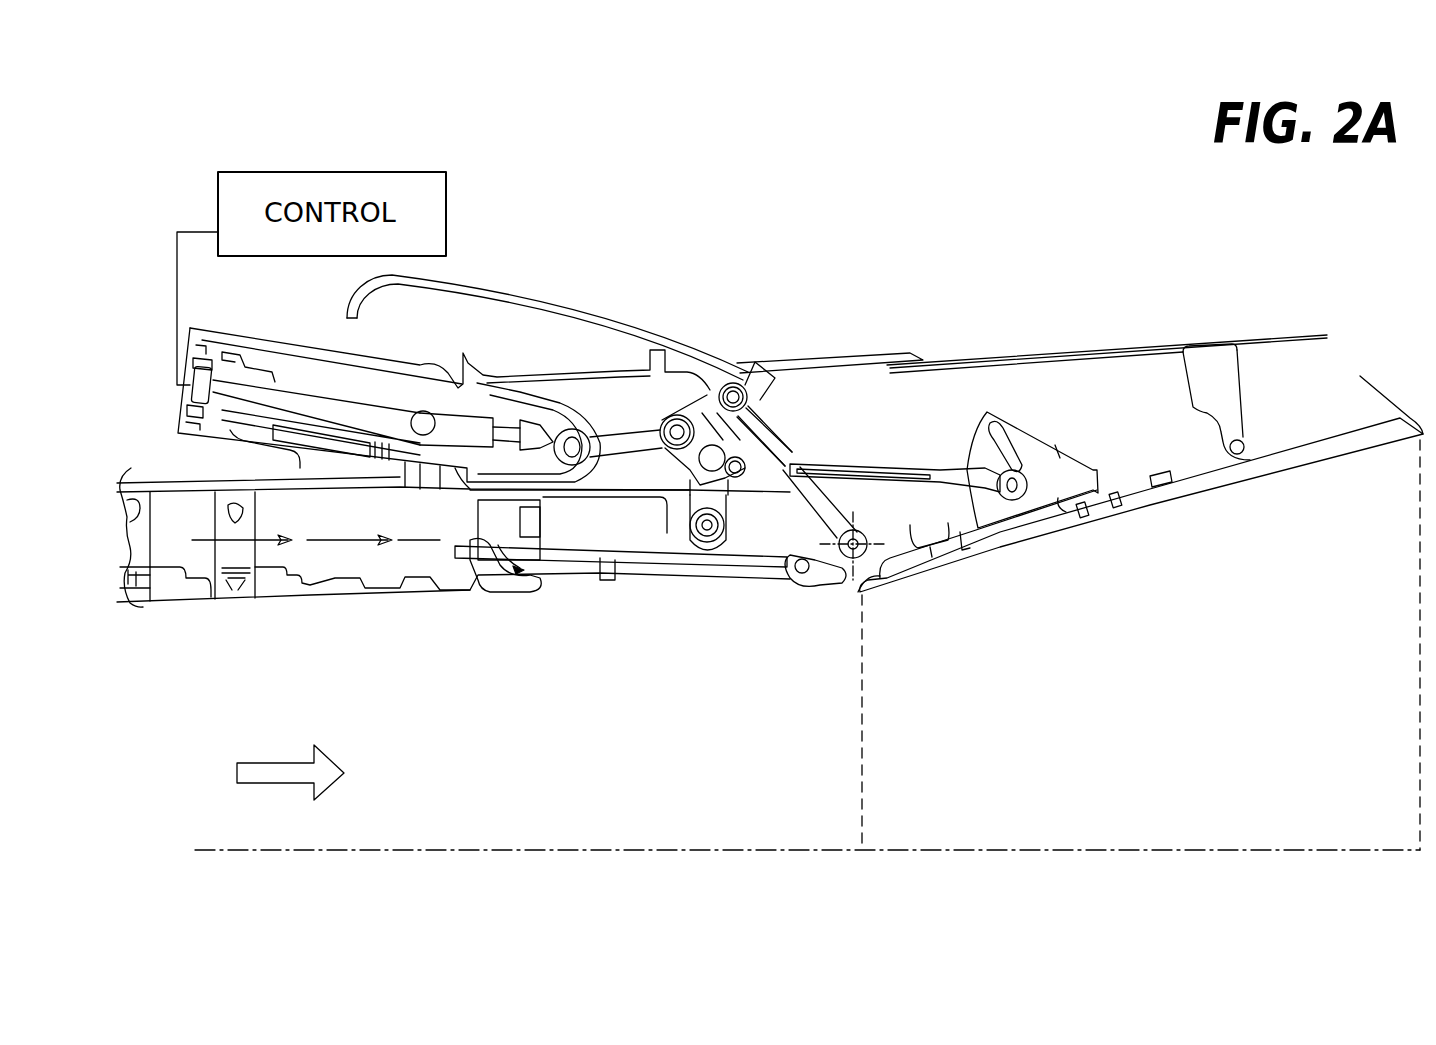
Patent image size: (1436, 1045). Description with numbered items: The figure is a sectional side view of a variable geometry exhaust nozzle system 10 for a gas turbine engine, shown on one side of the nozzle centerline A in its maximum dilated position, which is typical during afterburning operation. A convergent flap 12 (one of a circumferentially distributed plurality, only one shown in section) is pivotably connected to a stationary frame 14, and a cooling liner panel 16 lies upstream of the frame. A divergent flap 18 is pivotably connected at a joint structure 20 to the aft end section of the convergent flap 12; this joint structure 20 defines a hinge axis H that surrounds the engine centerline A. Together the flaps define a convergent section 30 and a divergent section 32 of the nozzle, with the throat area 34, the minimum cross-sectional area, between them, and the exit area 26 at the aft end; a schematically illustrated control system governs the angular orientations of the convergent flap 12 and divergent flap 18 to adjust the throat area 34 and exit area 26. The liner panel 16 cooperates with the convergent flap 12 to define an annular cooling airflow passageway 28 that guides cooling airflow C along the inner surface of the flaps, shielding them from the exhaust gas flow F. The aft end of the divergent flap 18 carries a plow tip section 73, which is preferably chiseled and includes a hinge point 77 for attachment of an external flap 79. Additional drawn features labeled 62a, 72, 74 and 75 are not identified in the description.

The nozzle system 10 is at (1027, 237).
The convergent flap 12 is at (693, 571).
The stationary frame 14 is at (562, 505).
The cooling liner panel 16 is at (465, 588).
The divergent flap 18 is at (1190, 511).
The joint structure 20 is at (855, 592).
The exit area 26 is at (1420, 645).
The annular cooling airflow passageway 28 is at (294, 522).
The convergent section 30 is at (615, 728).
The divergent section 32 is at (1118, 704).
The throat area 34 is at (862, 753).
The lip 62a is at (878, 598).
The inner panel 72 is at (1000, 540).
The plow tip section 73 is at (1300, 473).
The pivot lug 74 is at (808, 586).
The trailing edge 75 is at (1421, 430).
The hinge point 77 is at (1250, 449).
The external flap 79 is at (1140, 347).